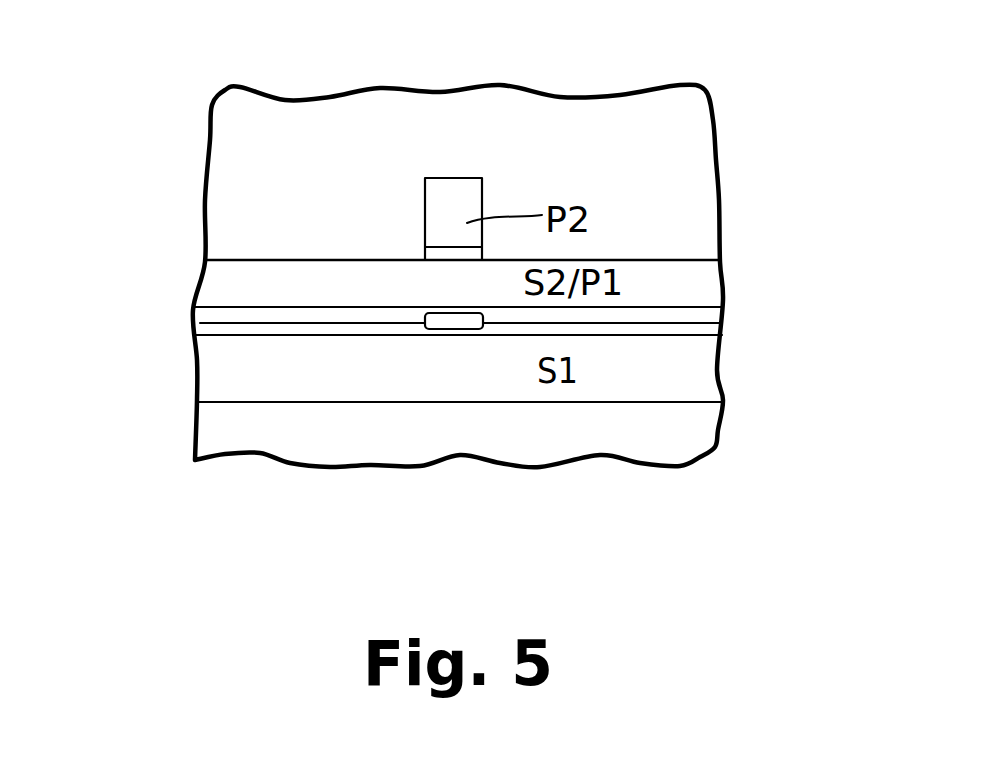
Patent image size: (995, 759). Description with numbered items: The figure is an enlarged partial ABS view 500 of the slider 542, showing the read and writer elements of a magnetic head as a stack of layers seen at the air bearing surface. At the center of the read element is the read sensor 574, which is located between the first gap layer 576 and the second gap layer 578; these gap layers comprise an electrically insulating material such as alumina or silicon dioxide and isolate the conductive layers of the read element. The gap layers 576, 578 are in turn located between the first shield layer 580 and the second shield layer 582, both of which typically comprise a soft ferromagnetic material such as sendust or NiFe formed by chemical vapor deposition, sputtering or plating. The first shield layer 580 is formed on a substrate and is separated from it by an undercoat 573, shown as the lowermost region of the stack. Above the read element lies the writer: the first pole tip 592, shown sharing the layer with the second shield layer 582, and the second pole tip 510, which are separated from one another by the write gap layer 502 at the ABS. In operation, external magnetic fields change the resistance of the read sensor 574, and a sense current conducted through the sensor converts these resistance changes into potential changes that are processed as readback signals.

The enlarged partial ABS view 500 is at (768, 97).
The slider 542 is at (235, 140).
The second pole tip (P2) 510 is at (455, 187).
The write gap layer 502 is at (457, 250).
The second shield layer (S2) 582 is at (370, 299).
The first pole tip (P1) 592 is at (220, 288).
The first gap layer 576 is at (303, 330).
The read sensor 574 is at (455, 322).
The undercoat 573 is at (555, 447).
The second gap layer 578 is at (663, 313).
The first shield layer (S1) 580 is at (700, 370).